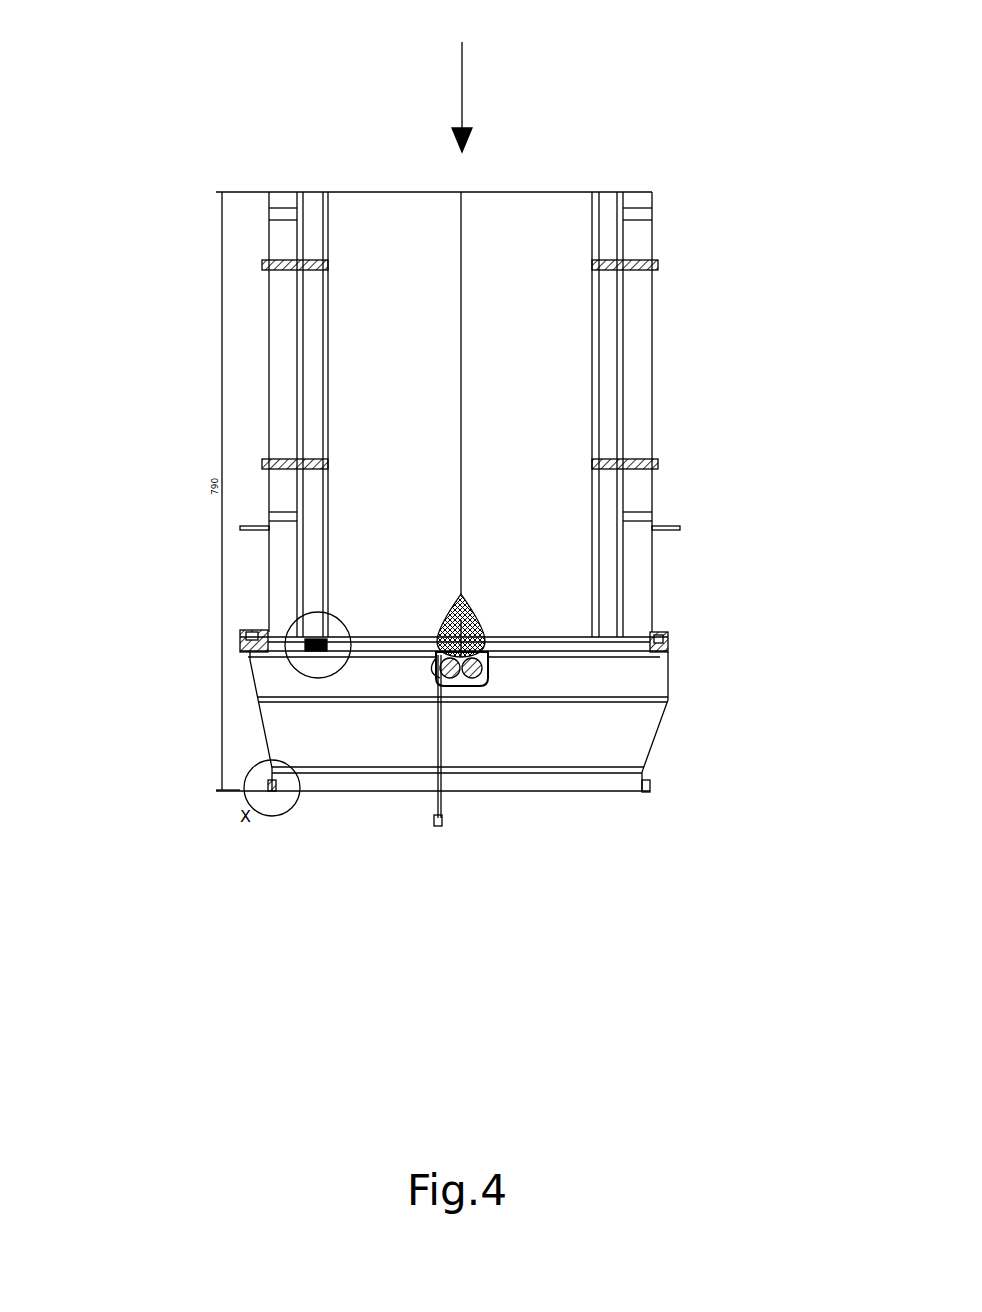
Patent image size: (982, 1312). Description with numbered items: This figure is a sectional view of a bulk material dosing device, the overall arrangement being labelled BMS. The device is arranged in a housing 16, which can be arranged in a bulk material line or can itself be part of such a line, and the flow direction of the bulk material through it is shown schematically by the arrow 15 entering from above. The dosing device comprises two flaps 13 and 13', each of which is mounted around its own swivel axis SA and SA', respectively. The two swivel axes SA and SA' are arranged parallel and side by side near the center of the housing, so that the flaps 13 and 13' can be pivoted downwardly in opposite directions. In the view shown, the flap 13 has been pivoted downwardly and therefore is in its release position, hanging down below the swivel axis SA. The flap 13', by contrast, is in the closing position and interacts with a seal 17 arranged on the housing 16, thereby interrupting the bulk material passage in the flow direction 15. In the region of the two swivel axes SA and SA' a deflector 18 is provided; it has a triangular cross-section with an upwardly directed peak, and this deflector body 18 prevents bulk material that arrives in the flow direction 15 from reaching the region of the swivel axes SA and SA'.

The flow direction arrow 15 is at (465, 78).
The battery module system BMS is at (643, 353).
The housing 16 is at (268, 343).
The seal 17 is at (258, 647).
The deflector 18 is at (470, 612).
The swivel axis SA is at (286, 713).
The swivel axis SA' is at (542, 789).
The flap 13' is at (526, 706).
The flap 13 is at (297, 860).